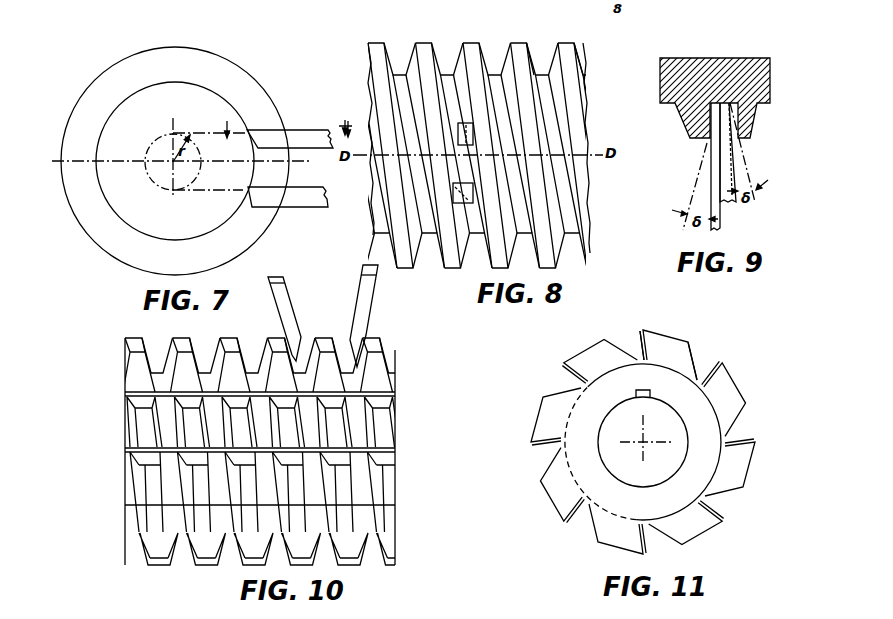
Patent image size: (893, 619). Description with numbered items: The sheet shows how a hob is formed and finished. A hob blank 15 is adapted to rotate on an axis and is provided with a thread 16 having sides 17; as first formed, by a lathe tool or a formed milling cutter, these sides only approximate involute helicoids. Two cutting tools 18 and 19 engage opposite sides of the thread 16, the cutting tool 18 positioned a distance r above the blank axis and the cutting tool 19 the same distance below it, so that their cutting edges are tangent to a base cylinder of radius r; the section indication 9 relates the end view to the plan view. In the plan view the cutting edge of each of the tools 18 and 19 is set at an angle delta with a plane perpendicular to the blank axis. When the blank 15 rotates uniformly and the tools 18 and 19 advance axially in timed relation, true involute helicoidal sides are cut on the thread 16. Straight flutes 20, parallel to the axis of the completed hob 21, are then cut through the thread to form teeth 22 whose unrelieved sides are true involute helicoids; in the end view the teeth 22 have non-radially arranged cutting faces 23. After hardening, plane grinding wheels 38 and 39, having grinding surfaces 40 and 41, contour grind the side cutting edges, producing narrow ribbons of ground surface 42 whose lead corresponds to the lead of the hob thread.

In FIG. 7, the section line 9- 9 is at (280, 123).
In FIG. 8, the section line 9- 9 is at (347, 119).
In FIG. 8, the hob blank 15 is at (478, 138).
In FIG. 8, the thread 16 is at (549, 155).
In FIG. 8, the sides 17 is at (506, 57).
In FIG. 7, the cutting tool 18 is at (324, 130).
In FIG. 8, the cutting tool 18 is at (462, 124).
In FIG. 9, the cutting tool 18 is at (740, 168).
In FIG. 7, the cutting tool 19 is at (300, 207).
In FIG. 8, the cutting tool 19 is at (458, 197).
In FIG. 9, the cutting tool 19 is at (722, 218).
In FIG. 10, the straight flutes 20 is at (396, 392).
In FIG. 11, the straight flutes 20 is at (630, 343).
In FIG. 10, the hob 21 is at (396, 451).
In FIG. 11, the teeth 22 is at (666, 345).
In FIG. 11, the cutting faces 23 is at (710, 372).
In FIG. 10, the grinding wheel 38 is at (273, 299).
In FIG. 10, the grinding wheel 39 is at (360, 296).
In FIG. 10, the grinding surface 40 is at (278, 319).
In FIG. 10, the grinding surface 41 is at (382, 313).
In FIG. 11, the ribbons of ground surface 42 is at (646, 330).